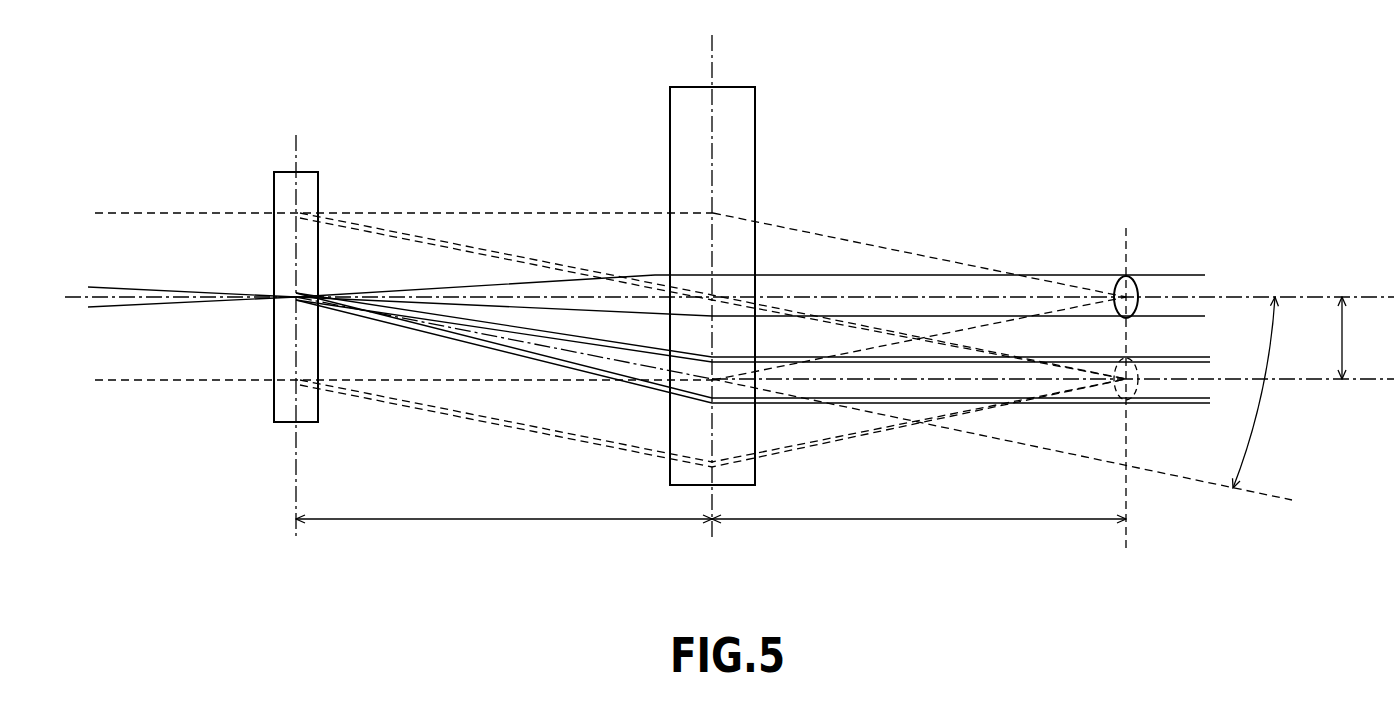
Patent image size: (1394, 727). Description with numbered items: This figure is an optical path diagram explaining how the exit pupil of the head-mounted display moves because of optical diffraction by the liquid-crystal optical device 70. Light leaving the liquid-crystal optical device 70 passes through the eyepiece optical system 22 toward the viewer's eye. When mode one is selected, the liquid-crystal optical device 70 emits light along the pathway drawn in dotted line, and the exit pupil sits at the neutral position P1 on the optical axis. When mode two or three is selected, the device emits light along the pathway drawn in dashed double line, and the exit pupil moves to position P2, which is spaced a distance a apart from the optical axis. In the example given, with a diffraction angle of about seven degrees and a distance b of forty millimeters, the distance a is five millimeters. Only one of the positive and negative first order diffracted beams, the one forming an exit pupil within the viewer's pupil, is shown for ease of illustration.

The liquid-crystal optical device 70 is at (283, 187).
The eyepiece optical system 22 is at (736, 100).
The neutral position P1 is at (1117, 280).
The exit pupil position P2 is at (1140, 390).
The distance a is at (1353, 338).
The distance b is at (711, 506).